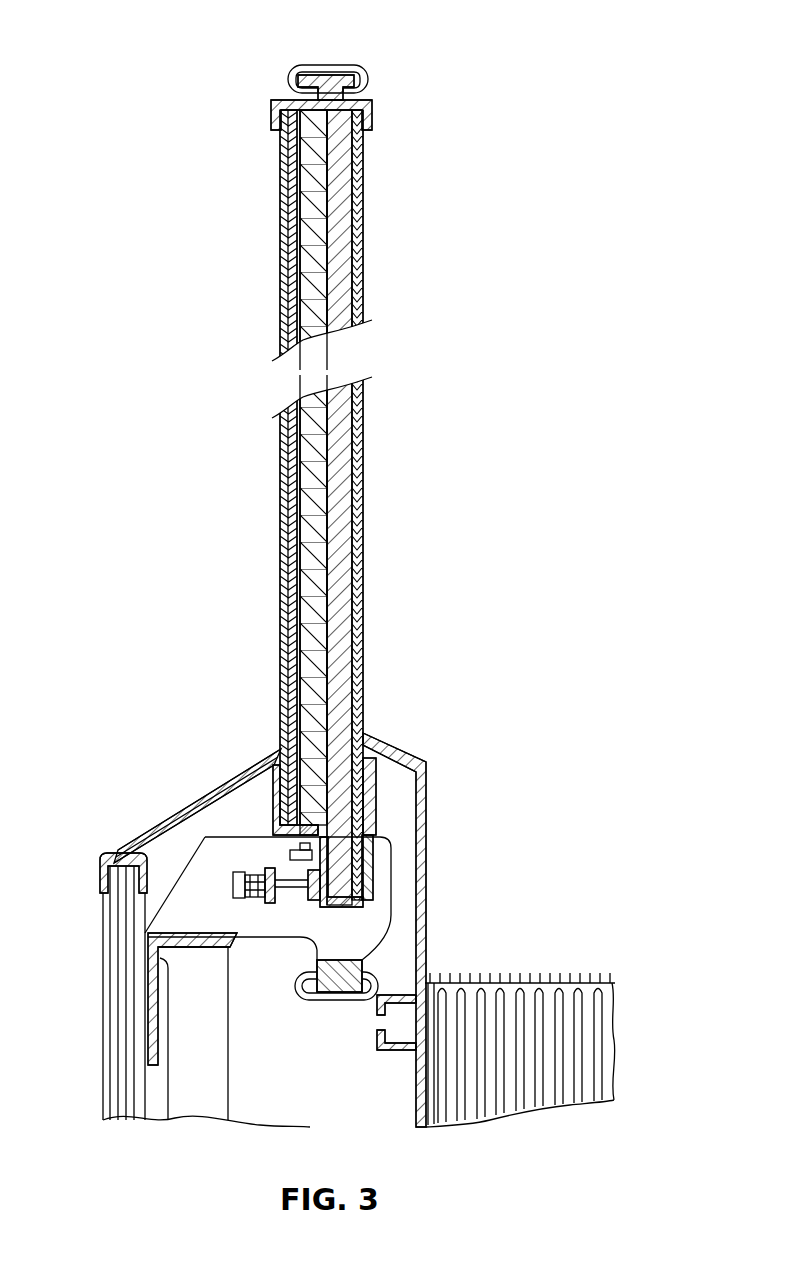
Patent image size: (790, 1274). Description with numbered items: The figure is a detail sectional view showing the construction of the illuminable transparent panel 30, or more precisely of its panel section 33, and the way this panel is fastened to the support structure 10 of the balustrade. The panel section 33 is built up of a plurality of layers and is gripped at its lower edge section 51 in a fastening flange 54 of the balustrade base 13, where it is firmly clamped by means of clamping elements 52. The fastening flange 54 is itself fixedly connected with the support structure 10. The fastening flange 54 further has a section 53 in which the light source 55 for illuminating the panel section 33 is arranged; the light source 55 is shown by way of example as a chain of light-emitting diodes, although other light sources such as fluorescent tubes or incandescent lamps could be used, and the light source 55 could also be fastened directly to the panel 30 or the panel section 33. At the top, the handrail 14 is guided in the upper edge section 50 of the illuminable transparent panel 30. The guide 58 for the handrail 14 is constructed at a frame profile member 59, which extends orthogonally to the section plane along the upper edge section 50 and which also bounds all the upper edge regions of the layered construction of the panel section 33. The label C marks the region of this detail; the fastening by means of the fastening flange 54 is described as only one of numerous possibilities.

The support structure 10 is at (193, 1040).
The balustrade base 13 is at (430, 817).
The handrail 14 is at (340, 68).
The illuminable transparent panel 30 is at (250, 295).
The panel section 33 is at (305, 553).
The upper edge section 50 is at (250, 137).
The lower edge section 51 is at (347, 922).
The clamping elements 52 is at (290, 897).
The section 53 is at (303, 833).
The fastening flange 54 is at (203, 875).
The light source 55 is at (277, 855).
The guide 58 is at (317, 80).
The frame profile member 59 is at (372, 107).
The flange C is at (223, 777).